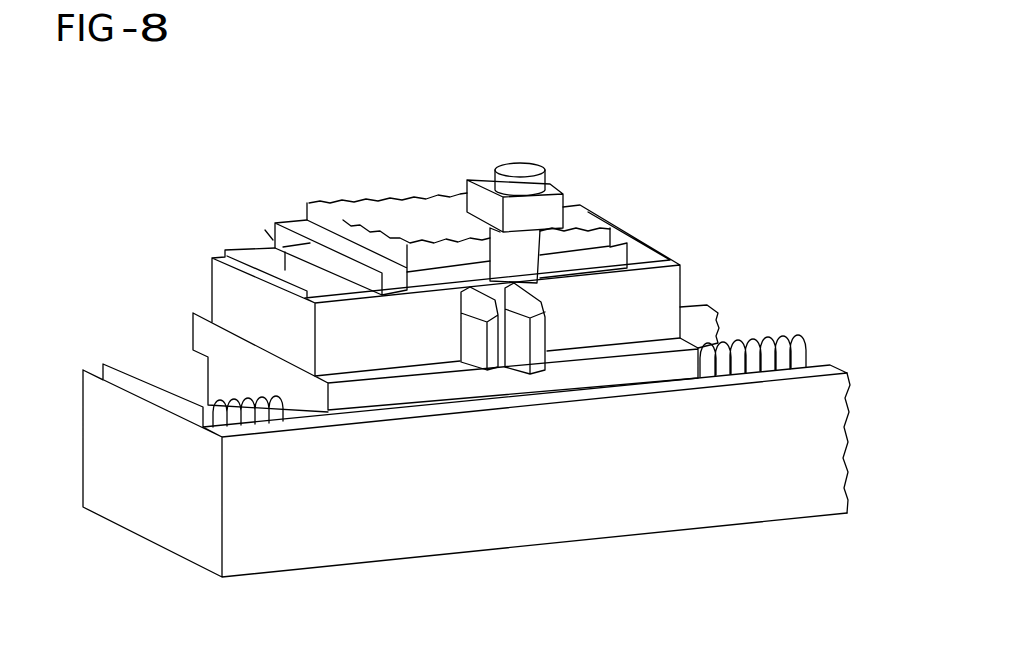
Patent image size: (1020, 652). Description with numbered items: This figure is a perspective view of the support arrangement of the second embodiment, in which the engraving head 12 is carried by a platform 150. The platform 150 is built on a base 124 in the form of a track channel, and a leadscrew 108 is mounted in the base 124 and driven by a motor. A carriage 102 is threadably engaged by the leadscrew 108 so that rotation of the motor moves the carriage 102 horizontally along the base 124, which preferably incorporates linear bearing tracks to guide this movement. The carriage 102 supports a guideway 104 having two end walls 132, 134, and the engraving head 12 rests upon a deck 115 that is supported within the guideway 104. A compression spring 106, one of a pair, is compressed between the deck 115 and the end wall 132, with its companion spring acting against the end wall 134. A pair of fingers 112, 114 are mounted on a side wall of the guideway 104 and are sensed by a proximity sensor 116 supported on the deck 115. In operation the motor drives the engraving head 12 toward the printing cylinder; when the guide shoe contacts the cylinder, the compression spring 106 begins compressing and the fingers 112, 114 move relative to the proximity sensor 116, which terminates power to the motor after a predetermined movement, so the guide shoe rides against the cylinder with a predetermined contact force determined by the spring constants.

The engraving head 12 is at (400, 222).
The carriage 102 is at (240, 368).
The guideway 104 is at (687, 283).
The compression spring 106 is at (272, 246).
The leadscrew 108 is at (290, 432).
The finger 112 is at (492, 350).
The finger 114 is at (540, 338).
The deck 115 is at (273, 240).
The proximity sensor 116 is at (517, 250).
The base 124 is at (152, 480).
The end wall 132 is at (250, 295).
The end wall 134 is at (583, 205).
The platform 150 is at (141, 301).